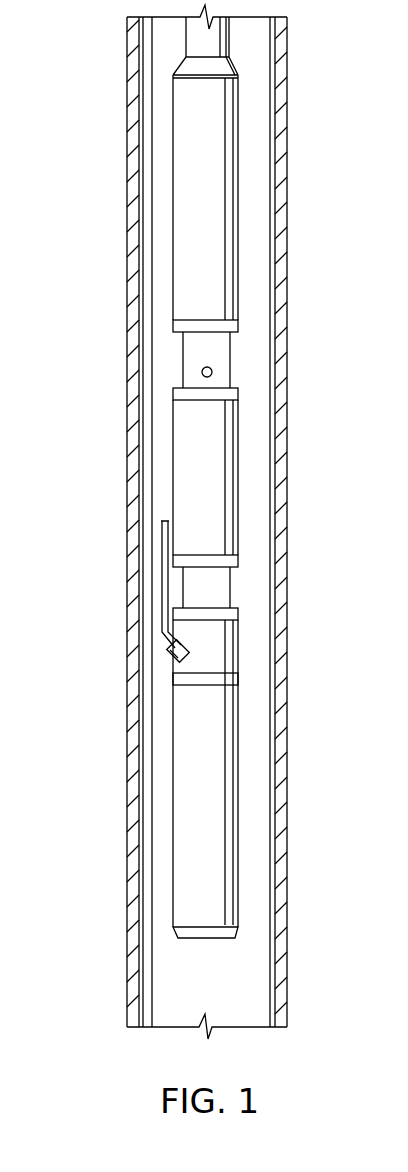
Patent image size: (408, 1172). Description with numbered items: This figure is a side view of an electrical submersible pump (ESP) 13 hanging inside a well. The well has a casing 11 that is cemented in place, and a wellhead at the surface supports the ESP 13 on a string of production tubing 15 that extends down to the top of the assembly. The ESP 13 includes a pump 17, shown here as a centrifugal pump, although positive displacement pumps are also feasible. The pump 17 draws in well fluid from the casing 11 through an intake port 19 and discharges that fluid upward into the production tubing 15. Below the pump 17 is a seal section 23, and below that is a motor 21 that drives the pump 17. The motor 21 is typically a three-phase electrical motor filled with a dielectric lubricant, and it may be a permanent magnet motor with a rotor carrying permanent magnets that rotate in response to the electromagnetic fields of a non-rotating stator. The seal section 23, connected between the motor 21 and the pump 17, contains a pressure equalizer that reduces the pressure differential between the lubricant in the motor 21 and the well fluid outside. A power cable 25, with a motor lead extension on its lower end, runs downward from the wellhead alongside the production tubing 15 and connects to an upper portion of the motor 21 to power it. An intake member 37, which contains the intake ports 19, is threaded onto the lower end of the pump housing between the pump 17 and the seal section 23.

The casing 11 is at (127, 846).
The electrical submersible pump 13 is at (196, 477).
The production tubing 15 is at (186, 42).
The pump 17 is at (173, 165).
The intake port 19 is at (212, 372).
The motor 21 is at (173, 720).
The seal section 23 is at (173, 463).
The power cable 25 is at (161, 587).
The intake member 37 is at (218, 350).